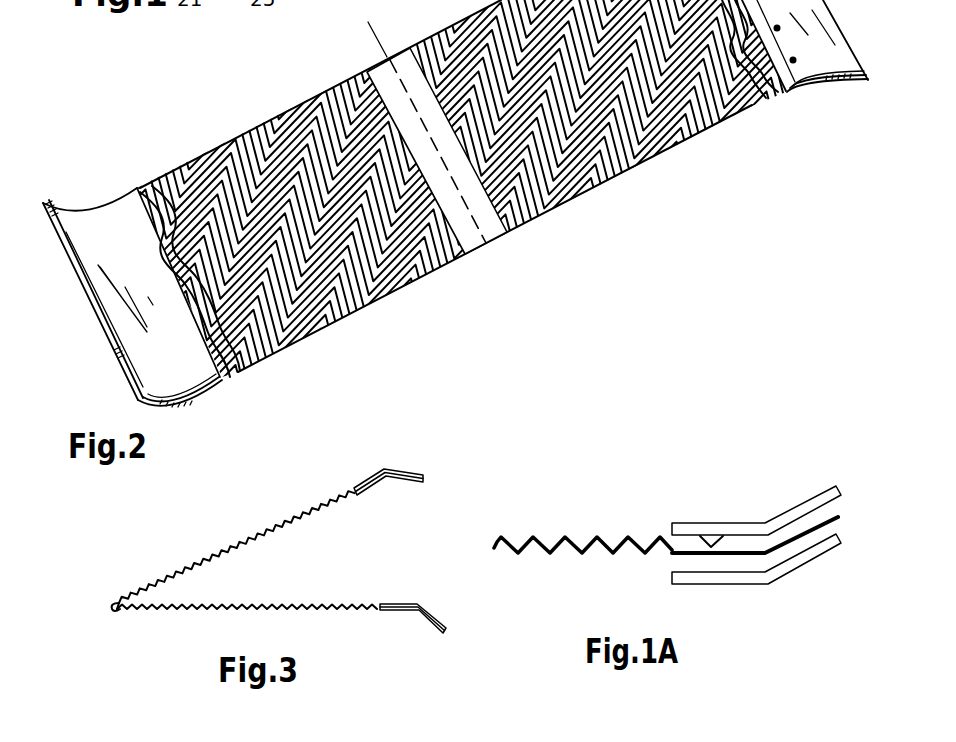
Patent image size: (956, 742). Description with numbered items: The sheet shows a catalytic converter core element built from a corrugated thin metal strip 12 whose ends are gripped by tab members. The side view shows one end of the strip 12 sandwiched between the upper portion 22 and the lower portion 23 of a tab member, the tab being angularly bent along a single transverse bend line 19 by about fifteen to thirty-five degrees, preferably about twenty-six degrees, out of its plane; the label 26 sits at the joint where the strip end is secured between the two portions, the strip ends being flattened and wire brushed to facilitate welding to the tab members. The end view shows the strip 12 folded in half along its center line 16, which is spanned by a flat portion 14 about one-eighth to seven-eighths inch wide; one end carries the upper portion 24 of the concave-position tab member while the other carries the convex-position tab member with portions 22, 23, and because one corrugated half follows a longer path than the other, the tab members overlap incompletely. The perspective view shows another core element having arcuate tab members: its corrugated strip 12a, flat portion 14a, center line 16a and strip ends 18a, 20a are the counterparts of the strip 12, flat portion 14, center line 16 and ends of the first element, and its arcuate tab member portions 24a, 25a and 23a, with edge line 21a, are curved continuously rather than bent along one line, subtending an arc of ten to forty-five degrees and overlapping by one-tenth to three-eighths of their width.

In FIG. 3, the corrugated thin metal strip 12 is at (272, 522).
In FIG. 1A, the corrugated thin metal strip 12 is at (560, 540).
In FIG. 2, the zigzag wire 12a is at (68, 214).
In FIG. 3, the flat portion 14 is at (118, 598).
In FIG. 2, the wire bend / junction strip 14a is at (396, 44).
In FIG. 3, the center line 16 is at (114, 606).
In FIG. 2, the belt edge 16a is at (496, 252).
In FIG. 2, the edge rod 18a is at (820, 87).
In FIG. 1A, the bend line 19 is at (760, 523).
In FIG. 2, the rod end cap 20a is at (222, 383).
In FIG. 2, the rod end cap inner ring 21a is at (183, 402).
In FIG. 3, the upper portion of tab member 22 is at (419, 603).
In FIG. 1A, the upper portion of tab member 22 is at (716, 528).
In FIG. 1A, the lower portion of tab member 23 is at (733, 577).
In FIG. 2, the arcuate tab member portion 23a is at (788, 91).
In FIG. 3, the upper portion of tab member 24 is at (388, 475).
In FIG. 2, the arcuate tab member portion 24a is at (128, 356).
In FIG. 2, the arcuate tab member portion 25a is at (200, 403).
In FIG. 1A, the weld 26 is at (702, 540).